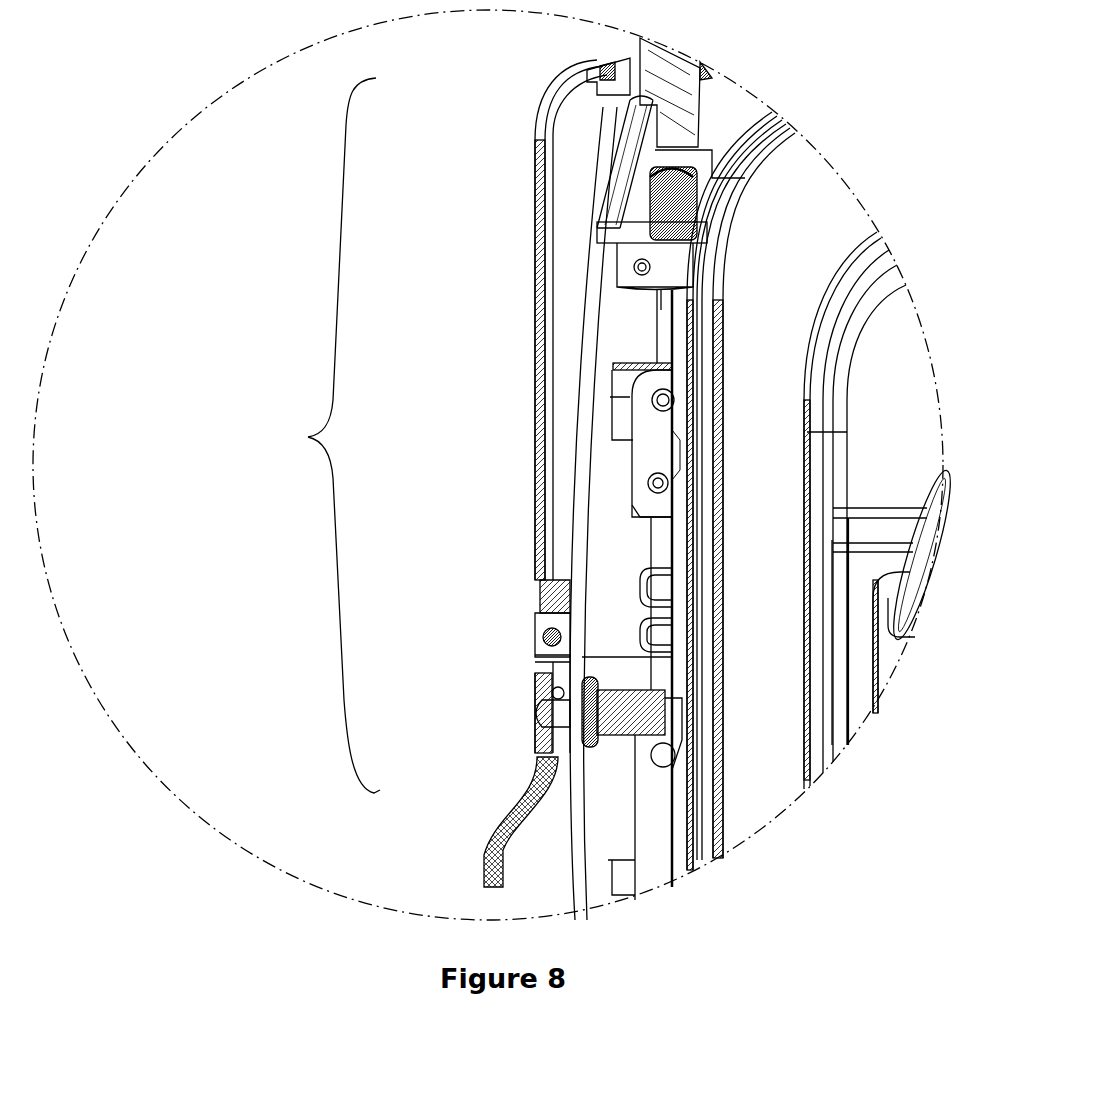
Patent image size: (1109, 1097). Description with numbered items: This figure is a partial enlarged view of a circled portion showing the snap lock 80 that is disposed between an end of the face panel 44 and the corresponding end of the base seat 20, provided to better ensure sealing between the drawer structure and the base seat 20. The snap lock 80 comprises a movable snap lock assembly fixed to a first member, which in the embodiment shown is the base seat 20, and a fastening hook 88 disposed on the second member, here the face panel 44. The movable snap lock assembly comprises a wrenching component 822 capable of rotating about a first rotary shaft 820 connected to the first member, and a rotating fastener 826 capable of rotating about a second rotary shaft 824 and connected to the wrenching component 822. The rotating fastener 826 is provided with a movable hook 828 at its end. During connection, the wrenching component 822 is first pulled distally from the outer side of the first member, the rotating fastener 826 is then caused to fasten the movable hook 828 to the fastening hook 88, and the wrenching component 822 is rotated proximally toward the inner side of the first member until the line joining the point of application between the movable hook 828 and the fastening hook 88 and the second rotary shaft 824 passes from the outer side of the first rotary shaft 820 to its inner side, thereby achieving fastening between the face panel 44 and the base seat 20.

The snap lock 80 is at (306, 437).
The rotating fastener 826 is at (537, 363).
The movable hook 828 is at (597, 66).
The face panel 44 is at (708, 72).
The fastening hook 88 is at (586, 113).
The base seat 20 is at (580, 845).
The first rotary shaft 820 is at (537, 637).
The second rotary shaft 824 is at (550, 693).
The wrenching component 822 is at (537, 752).